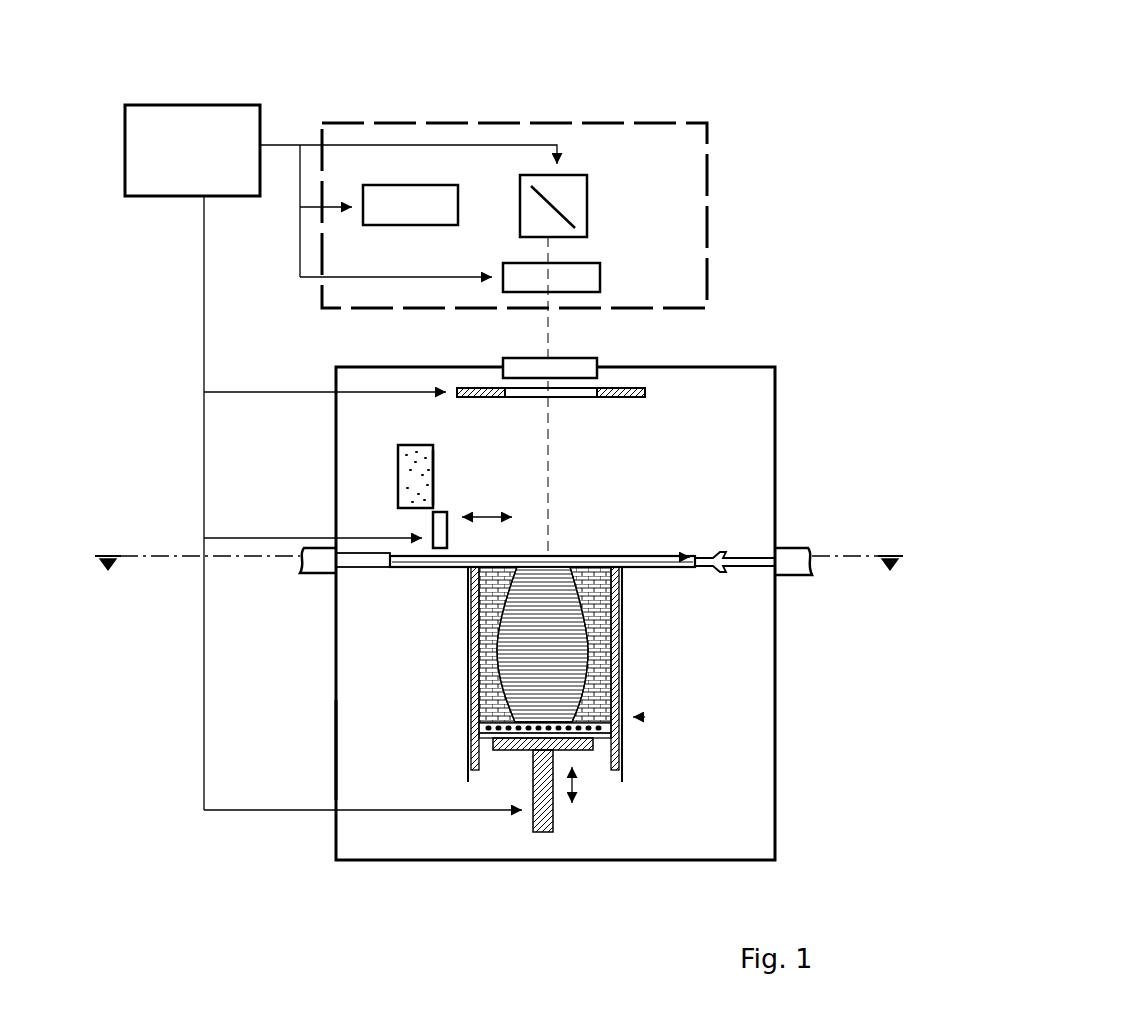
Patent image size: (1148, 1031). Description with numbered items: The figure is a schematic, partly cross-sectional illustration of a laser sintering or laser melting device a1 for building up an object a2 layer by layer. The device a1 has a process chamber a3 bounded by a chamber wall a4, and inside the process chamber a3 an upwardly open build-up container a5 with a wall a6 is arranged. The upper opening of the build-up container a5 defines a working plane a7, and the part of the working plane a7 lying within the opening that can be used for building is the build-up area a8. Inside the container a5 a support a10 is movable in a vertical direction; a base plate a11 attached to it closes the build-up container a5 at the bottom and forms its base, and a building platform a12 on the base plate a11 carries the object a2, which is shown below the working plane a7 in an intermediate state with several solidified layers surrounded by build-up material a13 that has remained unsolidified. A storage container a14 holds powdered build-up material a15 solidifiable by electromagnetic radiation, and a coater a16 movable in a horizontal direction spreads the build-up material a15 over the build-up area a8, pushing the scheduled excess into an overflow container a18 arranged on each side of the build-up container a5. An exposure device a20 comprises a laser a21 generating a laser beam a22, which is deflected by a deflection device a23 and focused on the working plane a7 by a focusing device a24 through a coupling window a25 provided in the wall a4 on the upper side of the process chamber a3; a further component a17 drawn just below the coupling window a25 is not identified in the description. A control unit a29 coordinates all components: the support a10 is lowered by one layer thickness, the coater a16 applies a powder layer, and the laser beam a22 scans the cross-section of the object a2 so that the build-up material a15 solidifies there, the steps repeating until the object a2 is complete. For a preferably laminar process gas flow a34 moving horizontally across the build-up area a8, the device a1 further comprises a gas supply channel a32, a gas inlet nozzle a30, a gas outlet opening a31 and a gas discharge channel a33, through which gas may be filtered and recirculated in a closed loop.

The laser sintering or laser melting device a1 is at (740, 134).
The object a2 is at (560, 604).
The process chamber a3 is at (732, 388).
The chamber wall a4 is at (334, 740).
The build-up container a5 is at (647, 715).
The wall a6 is at (635, 670).
The working plane a7 is at (673, 553).
The build-up area a8 is at (595, 553).
The support a10 is at (518, 753).
The base plate a11 is at (465, 757).
The building platform a12 is at (488, 728).
The build-up material that has remained unsolidified a13 is at (465, 602).
The storage container a14 is at (410, 450).
The powdered build-up material a15 is at (440, 476).
The coater a16 is at (430, 527).
The shutter plate a17 is at (478, 386).
The overflow container a18 is at (468, 665).
The exposure device a20 is at (709, 245).
The laser a21 is at (418, 218).
The laser beam a22 is at (483, 207).
The deflection device a23 is at (572, 194).
The focusing device a24 is at (580, 280).
The coupling window a25 is at (575, 360).
The control unit a29 is at (162, 176).
The gas inlet nozzle a30 is at (360, 568).
The gas outlet opening a31 is at (755, 552).
The gas supply channel a32 is at (320, 577).
The gas discharge channel a33 is at (793, 548).
The process gas flow a34 is at (668, 547).